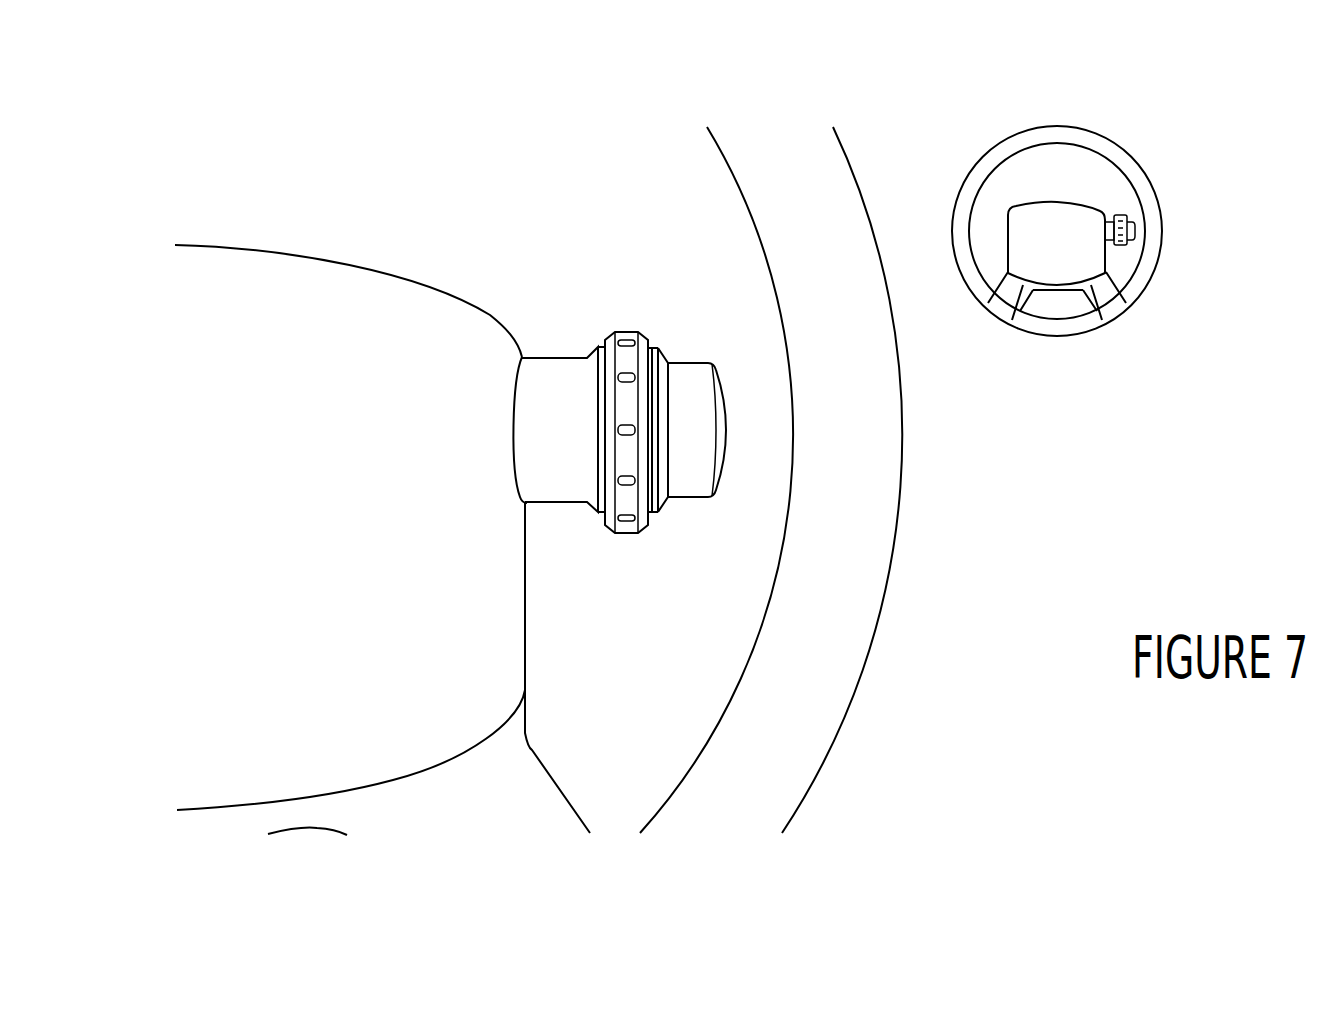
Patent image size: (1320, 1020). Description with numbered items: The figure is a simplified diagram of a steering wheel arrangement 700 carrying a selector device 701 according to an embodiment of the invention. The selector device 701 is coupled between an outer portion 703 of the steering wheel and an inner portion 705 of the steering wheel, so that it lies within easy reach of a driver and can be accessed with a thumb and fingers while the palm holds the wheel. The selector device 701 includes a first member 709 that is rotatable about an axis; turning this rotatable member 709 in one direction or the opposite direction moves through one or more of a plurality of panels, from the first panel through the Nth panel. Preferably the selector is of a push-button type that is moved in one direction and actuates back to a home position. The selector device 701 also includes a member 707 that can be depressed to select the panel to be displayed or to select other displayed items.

The steering wheel assembly 700 is at (1131, 245).
The selector device 701 is at (1128, 243).
The outer portion of a steering wheel 703 is at (1153, 223).
The inner portion of the steering wheel 705 is at (1070, 255).
The member 707 is at (690, 490).
The first member 709 is at (620, 337).